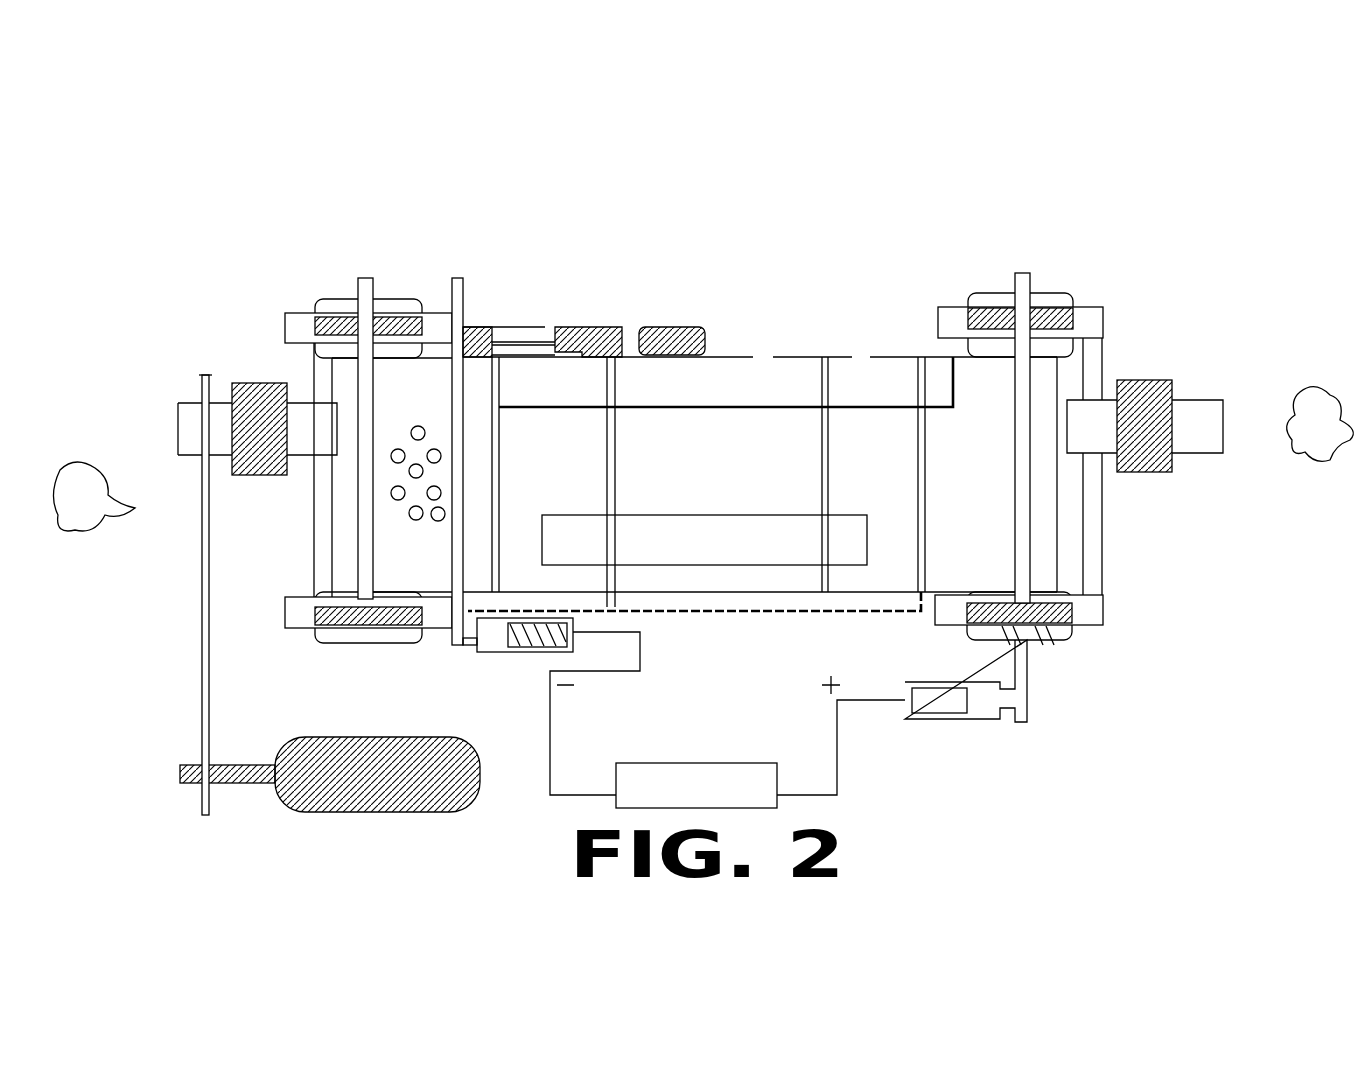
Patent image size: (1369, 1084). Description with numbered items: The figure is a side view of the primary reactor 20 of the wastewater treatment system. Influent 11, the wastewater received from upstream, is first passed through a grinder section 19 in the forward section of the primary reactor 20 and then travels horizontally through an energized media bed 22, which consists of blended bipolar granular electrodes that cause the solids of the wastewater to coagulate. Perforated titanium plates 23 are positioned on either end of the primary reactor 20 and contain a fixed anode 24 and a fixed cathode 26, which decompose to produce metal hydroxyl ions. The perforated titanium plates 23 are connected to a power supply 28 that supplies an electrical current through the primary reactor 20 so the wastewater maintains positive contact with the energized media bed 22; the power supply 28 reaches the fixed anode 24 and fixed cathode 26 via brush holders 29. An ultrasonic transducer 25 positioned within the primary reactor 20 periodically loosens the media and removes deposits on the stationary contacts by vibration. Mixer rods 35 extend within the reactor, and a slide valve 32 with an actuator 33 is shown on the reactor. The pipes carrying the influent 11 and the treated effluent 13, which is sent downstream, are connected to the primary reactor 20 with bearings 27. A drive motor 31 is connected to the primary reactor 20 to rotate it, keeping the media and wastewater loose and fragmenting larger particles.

The influent 11 is at (317, 430).
The effluent 13 is at (1093, 428).
The grinder section 19 is at (408, 538).
The primary reactor 20 is at (392, 238).
The energized media bed 22 is at (653, 498).
The perforated titanium plates 23 is at (1015, 273).
The fixed anode 24 is at (450, 286).
The ultrasonic transducer 25 is at (670, 557).
The fixed cathode 26 is at (1025, 272).
The bearings 27 is at (262, 383).
The power supply 28 is at (671, 802).
The brush holders 29 is at (878, 713).
The drive motor 31 is at (370, 812).
The slide valve 32 is at (613, 330).
The actuator 33 is at (678, 327).
The mixer rods 35 is at (917, 438).